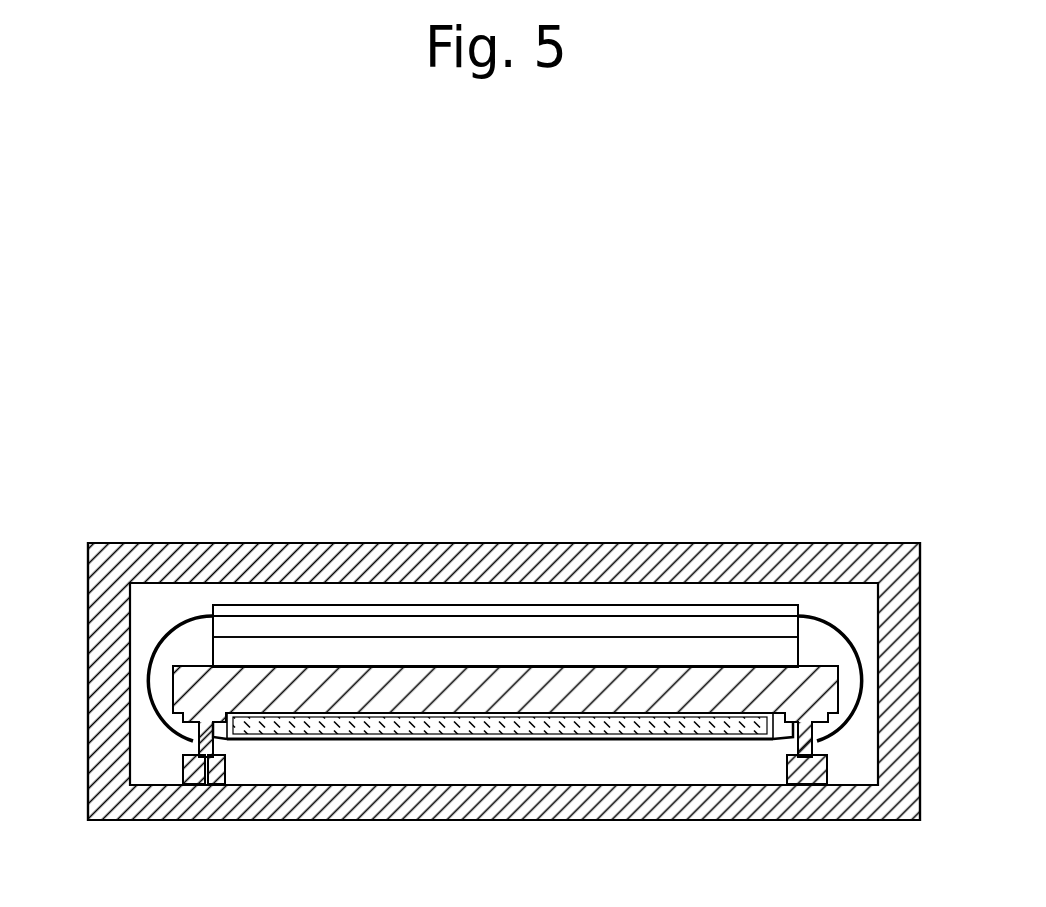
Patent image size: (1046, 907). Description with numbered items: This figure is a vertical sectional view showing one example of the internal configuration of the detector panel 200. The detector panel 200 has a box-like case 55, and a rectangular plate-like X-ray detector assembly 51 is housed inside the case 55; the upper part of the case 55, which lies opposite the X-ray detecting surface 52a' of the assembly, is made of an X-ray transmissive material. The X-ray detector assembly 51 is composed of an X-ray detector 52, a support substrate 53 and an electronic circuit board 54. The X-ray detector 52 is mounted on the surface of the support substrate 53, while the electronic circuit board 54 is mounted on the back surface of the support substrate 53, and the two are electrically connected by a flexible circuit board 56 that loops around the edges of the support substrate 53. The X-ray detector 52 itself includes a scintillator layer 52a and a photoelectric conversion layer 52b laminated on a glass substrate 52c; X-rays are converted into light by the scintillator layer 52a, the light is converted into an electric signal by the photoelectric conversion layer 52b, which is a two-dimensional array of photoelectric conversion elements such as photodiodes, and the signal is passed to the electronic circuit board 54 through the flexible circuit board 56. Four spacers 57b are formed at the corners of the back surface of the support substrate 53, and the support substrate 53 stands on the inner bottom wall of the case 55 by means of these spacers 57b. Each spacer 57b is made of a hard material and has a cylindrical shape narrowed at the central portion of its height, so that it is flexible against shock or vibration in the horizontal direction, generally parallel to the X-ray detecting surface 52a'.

The detector panel 200 is at (542, 295).
The X-ray detector assembly 51 is at (833, 606).
The X-ray detector 52 is at (668, 632).
The scintillator layer 52a is at (505, 544).
The X-ray detecting surface 52a' is at (505, 521).
The photoelectric conversion layer 52b is at (328, 632).
The glass substrate 52c is at (447, 655).
The support substrate 53 is at (523, 700).
The electronic circuit board 54 is at (652, 725).
The case 55 is at (340, 805).
The flexible circuit board 56 is at (155, 720).
The spacer 57b is at (206, 745).